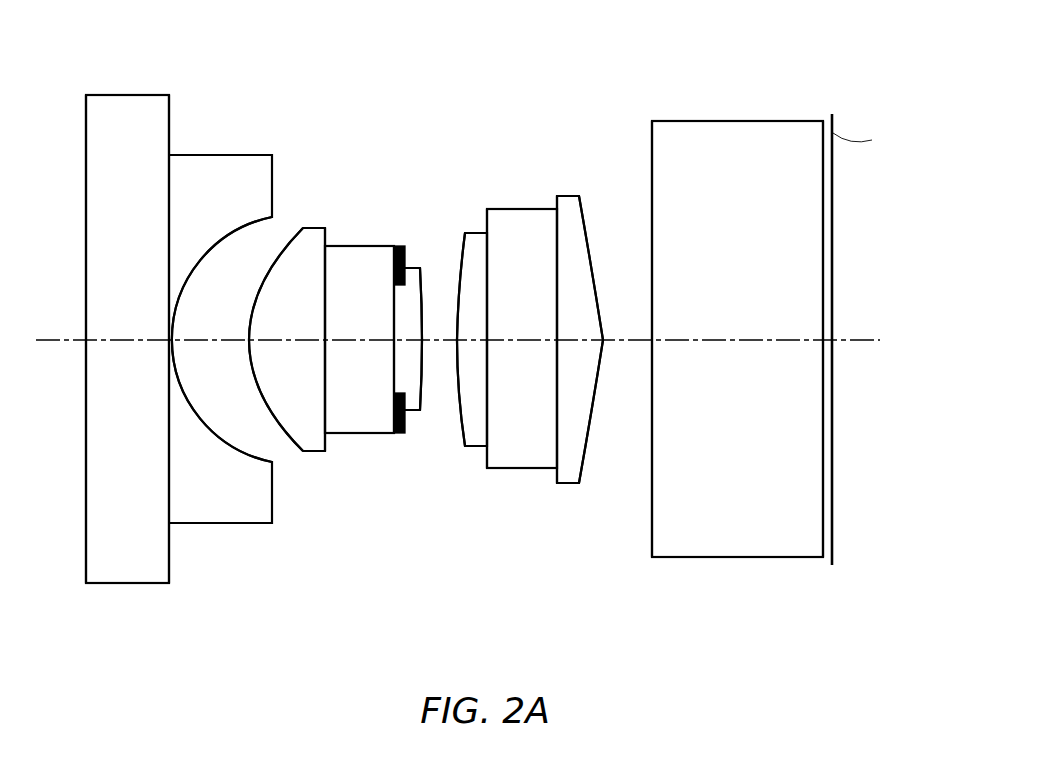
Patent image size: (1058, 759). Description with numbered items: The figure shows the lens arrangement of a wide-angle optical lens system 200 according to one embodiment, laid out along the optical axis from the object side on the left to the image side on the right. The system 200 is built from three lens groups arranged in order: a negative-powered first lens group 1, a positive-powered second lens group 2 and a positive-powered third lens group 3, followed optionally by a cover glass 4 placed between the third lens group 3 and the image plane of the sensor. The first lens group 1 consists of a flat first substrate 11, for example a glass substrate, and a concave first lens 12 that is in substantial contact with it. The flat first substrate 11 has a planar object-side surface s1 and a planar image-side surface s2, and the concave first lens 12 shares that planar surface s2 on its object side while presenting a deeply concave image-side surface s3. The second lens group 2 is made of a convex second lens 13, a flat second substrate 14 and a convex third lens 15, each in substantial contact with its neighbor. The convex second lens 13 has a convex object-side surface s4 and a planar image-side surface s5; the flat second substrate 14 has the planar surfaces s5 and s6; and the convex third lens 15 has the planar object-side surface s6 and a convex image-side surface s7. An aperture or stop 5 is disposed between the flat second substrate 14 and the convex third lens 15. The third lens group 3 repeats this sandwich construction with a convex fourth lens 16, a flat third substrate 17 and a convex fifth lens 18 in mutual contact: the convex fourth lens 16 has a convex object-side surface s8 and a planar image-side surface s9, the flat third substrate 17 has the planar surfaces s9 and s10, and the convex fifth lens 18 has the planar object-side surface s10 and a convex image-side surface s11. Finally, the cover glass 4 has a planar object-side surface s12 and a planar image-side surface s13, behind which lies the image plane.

The wide-angle optical lens system 200 is at (54, 38).
The negative-powered first lens group 1 is at (237, 647).
The flat first substrate 11 is at (122, 585).
The concave first lens 12 is at (210, 525).
The positive-powered second lens group 2 is at (430, 516).
The convex second lens 13 is at (312, 453).
The flat second substrate 14 is at (358, 434).
The convex third lens 15 is at (410, 412).
The aperture 5 is at (401, 250).
The positive-powered third lens group 3 is at (587, 547).
The convex fourth lens 16 is at (472, 448).
The flat third substrate 17 is at (518, 470).
The convex fifth lens 18 is at (566, 485).
The cover glass 4 is at (735, 559).
The planar object-side surface of the flat first substrate s1 is at (86, 125).
The planar image-side surface of the flat first substrate s2 is at (171, 215).
The concave image-side surface of the concave first lens s3 is at (265, 225).
The convex object-side surface of the convex second lens s4 is at (288, 242).
The planar image-side surface of the convex second lens s5 is at (327, 270).
The planar image-side surface of the flat second substrate s6 is at (393, 295).
The convex image-side surface of the convex third lens s7 is at (421, 290).
The convex object-side surface of the convex fourth lens s8 is at (460, 250).
The planar image-side surface of the convex fourth lens s9 is at (487, 245).
The planar image-side surface of the flat third substrate s10 is at (556, 225).
The convex image-side surface of the convex fifth lens s11 is at (590, 230).
The planar object-side surface of the cover glass s12 is at (650, 455).
The planar image-side surface of the cover glass s13 is at (822, 468).